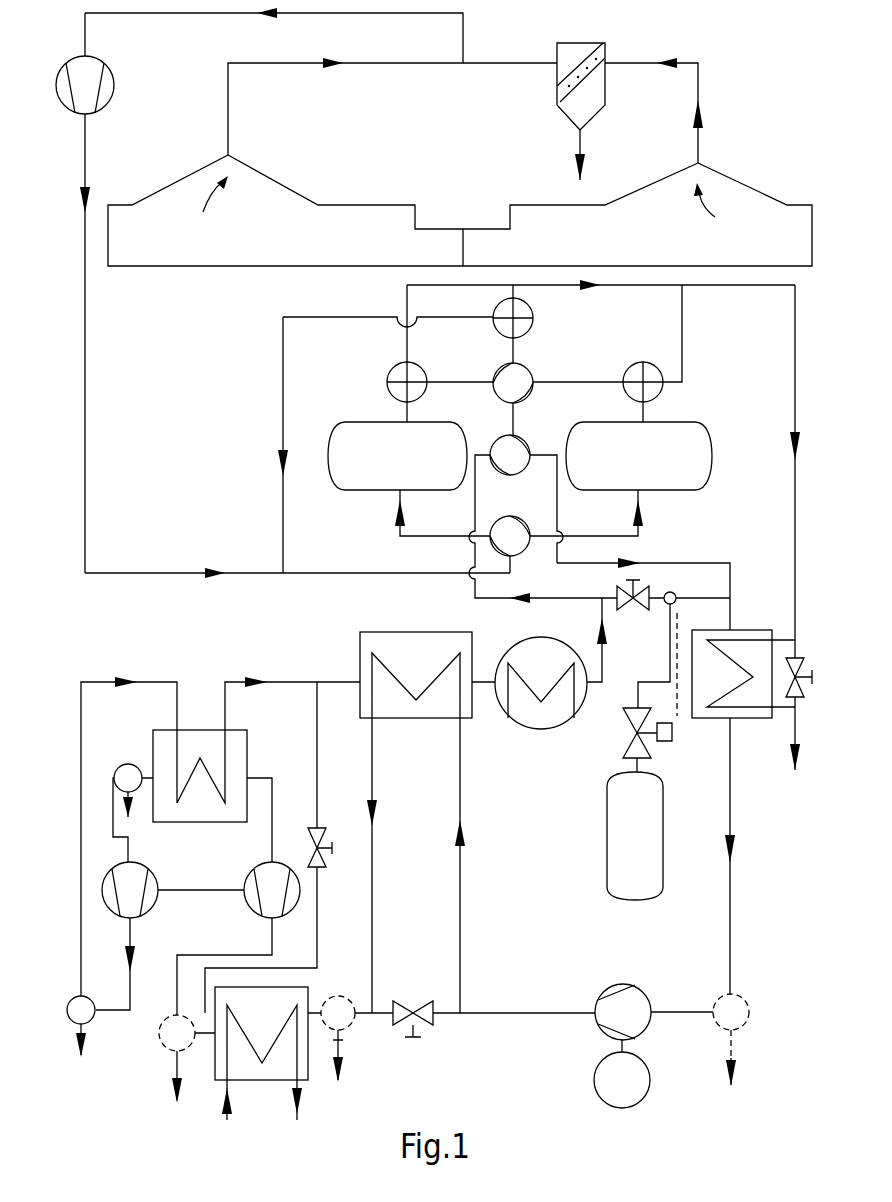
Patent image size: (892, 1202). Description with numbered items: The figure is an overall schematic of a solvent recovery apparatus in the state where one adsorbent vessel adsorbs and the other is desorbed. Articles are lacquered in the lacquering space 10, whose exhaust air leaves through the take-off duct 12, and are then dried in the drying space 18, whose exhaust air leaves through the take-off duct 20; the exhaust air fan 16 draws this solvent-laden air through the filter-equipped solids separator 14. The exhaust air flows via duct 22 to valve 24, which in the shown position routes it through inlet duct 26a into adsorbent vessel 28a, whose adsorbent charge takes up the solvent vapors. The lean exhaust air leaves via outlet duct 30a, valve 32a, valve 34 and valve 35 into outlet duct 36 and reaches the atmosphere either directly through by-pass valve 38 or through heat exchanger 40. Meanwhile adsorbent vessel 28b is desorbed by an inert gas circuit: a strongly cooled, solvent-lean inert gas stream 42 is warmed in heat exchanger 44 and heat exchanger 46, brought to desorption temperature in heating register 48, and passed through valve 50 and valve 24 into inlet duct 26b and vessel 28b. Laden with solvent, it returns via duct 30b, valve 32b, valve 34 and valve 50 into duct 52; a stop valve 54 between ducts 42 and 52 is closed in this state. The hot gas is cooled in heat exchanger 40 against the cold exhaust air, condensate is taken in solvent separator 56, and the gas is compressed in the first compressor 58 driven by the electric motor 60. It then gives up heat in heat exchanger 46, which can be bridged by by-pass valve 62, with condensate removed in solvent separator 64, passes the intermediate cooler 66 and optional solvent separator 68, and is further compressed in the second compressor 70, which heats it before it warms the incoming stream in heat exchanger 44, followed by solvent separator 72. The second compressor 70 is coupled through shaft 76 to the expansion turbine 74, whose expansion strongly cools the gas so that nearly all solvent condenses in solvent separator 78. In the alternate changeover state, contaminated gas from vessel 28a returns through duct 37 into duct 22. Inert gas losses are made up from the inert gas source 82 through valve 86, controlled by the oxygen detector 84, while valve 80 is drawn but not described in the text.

The lacquering space 10 is at (683, 251).
The take-off duct 12 is at (700, 147).
The solids separator 14 is at (588, 43).
The exhaust air fan 16 is at (93, 58).
The drying space 18 is at (279, 247).
The take-off duct 20 is at (230, 126).
The exhaust air duct 22 is at (130, 573).
The valve 24 is at (523, 547).
The inlet duct 26a is at (398, 503).
The inlet duct 26b is at (642, 501).
The adsorbent vessel 28a is at (416, 466).
The adsorbent vessel 28b is at (655, 466).
The outlet duct 30a is at (404, 412).
The outlet duct 30b is at (641, 412).
The valve 32a is at (390, 374).
The valve 32b is at (664, 386).
The valve 34 is at (497, 396).
The valve 35 is at (533, 322).
The outlet duct 36 is at (795, 511).
The duct 37 is at (283, 428).
The by-pass valve 38 is at (797, 700).
The heat exchanger 40 is at (702, 720).
The inert gas stream 42 is at (320, 680).
The heat exchanger 44 is at (247, 745).
The heat exchanger 46 is at (416, 718).
The heating register 48 is at (541, 729).
The valve 50 is at (522, 464).
The duct 52 is at (672, 563).
The stop valve 54 is at (636, 612).
The solvent separator 56 is at (731, 1053).
The first compressor 58 is at (648, 995).
The electric motor 60 is at (630, 1108).
The by-pass valve 62 is at (420, 1022).
The solvent separator 64 is at (349, 1028).
The intermediate cooler 66 is at (307, 979).
The solvent separator 68 is at (176, 1054).
The second compressor 70 is at (255, 912).
The solvent separator 72 is at (128, 764).
The expansion turbine 74 is at (158, 868).
The shaft 76 is at (200, 891).
The solvent separator 78 is at (92, 1022).
The valve 80 is at (320, 836).
The inert gas source 82 is at (647, 847).
The oxygen detector 84 is at (675, 593).
The valve 86 is at (631, 743).